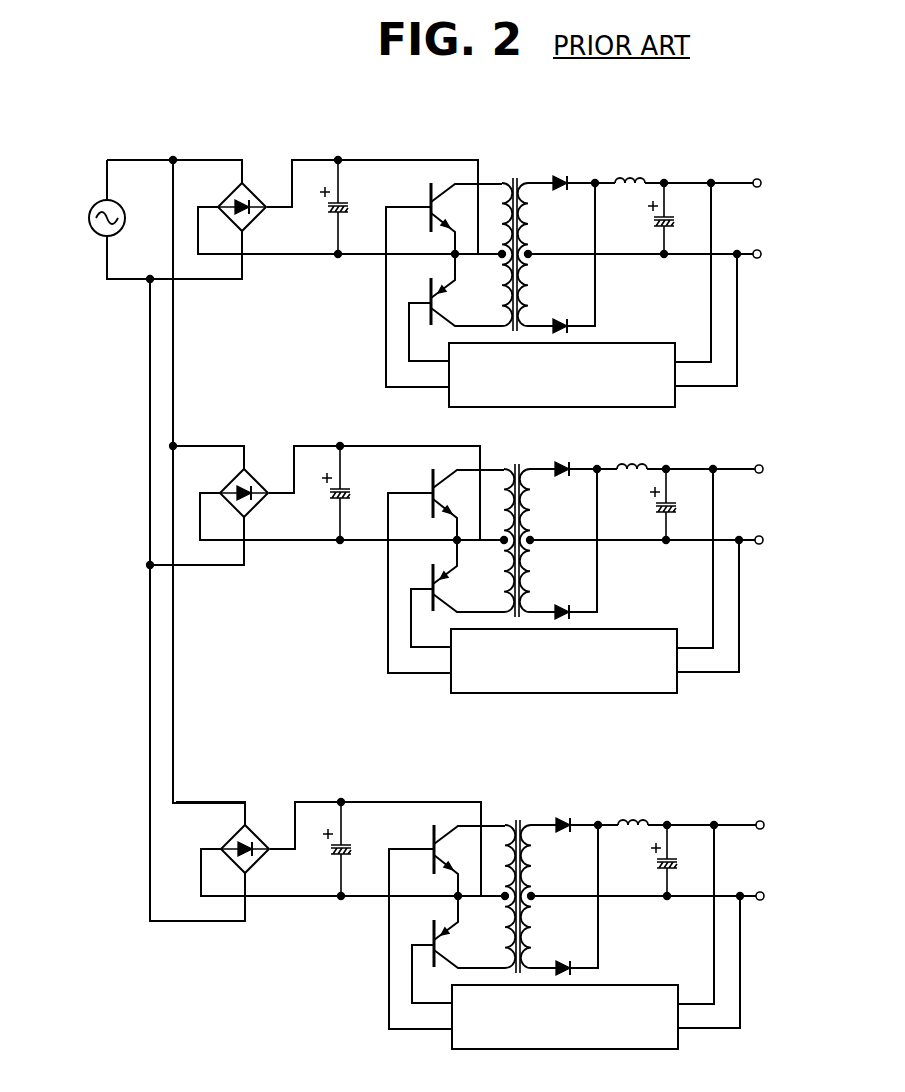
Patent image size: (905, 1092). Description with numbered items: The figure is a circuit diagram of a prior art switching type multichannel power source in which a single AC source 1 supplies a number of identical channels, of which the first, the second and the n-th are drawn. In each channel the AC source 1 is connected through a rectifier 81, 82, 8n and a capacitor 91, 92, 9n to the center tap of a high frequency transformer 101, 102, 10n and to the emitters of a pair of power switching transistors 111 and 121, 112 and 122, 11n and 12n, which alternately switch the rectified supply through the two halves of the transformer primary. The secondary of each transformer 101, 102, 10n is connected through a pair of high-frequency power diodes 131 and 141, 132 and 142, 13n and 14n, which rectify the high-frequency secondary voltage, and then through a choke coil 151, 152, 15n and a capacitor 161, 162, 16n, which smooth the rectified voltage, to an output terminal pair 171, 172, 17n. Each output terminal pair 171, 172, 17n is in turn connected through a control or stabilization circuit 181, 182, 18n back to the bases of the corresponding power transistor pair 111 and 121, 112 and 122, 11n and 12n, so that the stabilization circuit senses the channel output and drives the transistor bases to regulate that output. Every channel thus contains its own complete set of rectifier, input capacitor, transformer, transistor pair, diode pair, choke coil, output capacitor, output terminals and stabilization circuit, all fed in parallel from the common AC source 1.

The AC source 1 is at (89, 218).
The rectifier 81 is at (249, 190).
The rectifier 82 is at (246, 471).
The rectifier 8n is at (249, 827).
The capacitor 91 is at (331, 209).
The capacitor 92 is at (315, 493).
The capacitor 9n is at (316, 849).
The high frequency transformer 101 is at (513, 178).
The high frequency transformer 102 is at (511, 512).
The high frequency transformer 10n is at (512, 868).
The power switching transistor 111 is at (428, 197).
The power switching transistor 112 is at (440, 563).
The power switching transistor 11n is at (441, 919).
The power switching transistor 121 is at (441, 302).
The power switching transistor 122 is at (458, 593).
The power switching transistor 12n is at (461, 949).
The high-frequency power diode 131 is at (558, 194).
The high-frequency power diode 132 is at (564, 497).
The high-frequency power diode 13n is at (567, 852).
The high-frequency power diode 141 is at (558, 317).
The high-frequency power diode 142 is at (564, 584).
The high-frequency power diode 14n is at (567, 940).
The choke coil 151 is at (628, 174).
The choke coil 152 is at (631, 436).
The choke coil 15n is at (634, 792).
The capacitor 161 is at (653, 215).
The capacitor 162 is at (639, 504).
The capacitor 16n is at (640, 860).
The output terminal pair 171 is at (762, 182).
The output terminal pair 172 is at (794, 505).
The output terminal pair 17n is at (797, 861).
The stabilization circuit 181 is at (642, 343).
The stabilization circuit 182 is at (564, 632).
The stabilization circuit 18n is at (565, 988).